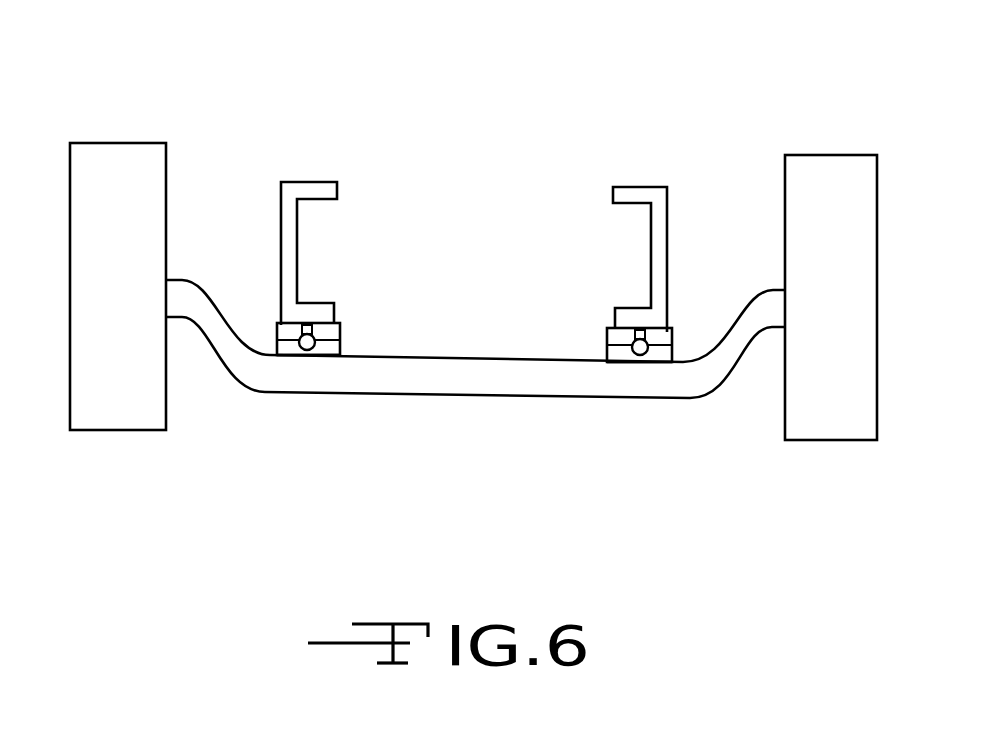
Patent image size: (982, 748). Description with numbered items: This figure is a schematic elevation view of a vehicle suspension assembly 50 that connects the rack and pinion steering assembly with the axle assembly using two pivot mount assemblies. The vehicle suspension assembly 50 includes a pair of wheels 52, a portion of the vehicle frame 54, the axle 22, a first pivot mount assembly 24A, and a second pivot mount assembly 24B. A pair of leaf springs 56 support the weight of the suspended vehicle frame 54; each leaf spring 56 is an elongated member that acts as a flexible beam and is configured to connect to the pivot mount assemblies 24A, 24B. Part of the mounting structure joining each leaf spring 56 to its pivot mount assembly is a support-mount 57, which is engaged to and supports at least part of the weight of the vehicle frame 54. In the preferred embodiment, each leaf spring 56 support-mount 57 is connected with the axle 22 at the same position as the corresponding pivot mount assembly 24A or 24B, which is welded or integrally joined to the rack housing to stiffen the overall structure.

The vehicle suspension assembly 50 is at (442, 80).
The axle 22 is at (637, 380).
The wheels 52 is at (152, 162).
The vehicle frame 54 is at (657, 192).
The leaf springs 56 is at (285, 328).
The support-mount 57 is at (308, 325).
The first pivot mount assembly 24A is at (332, 350).
The second pivot mount assembly 24B is at (612, 355).